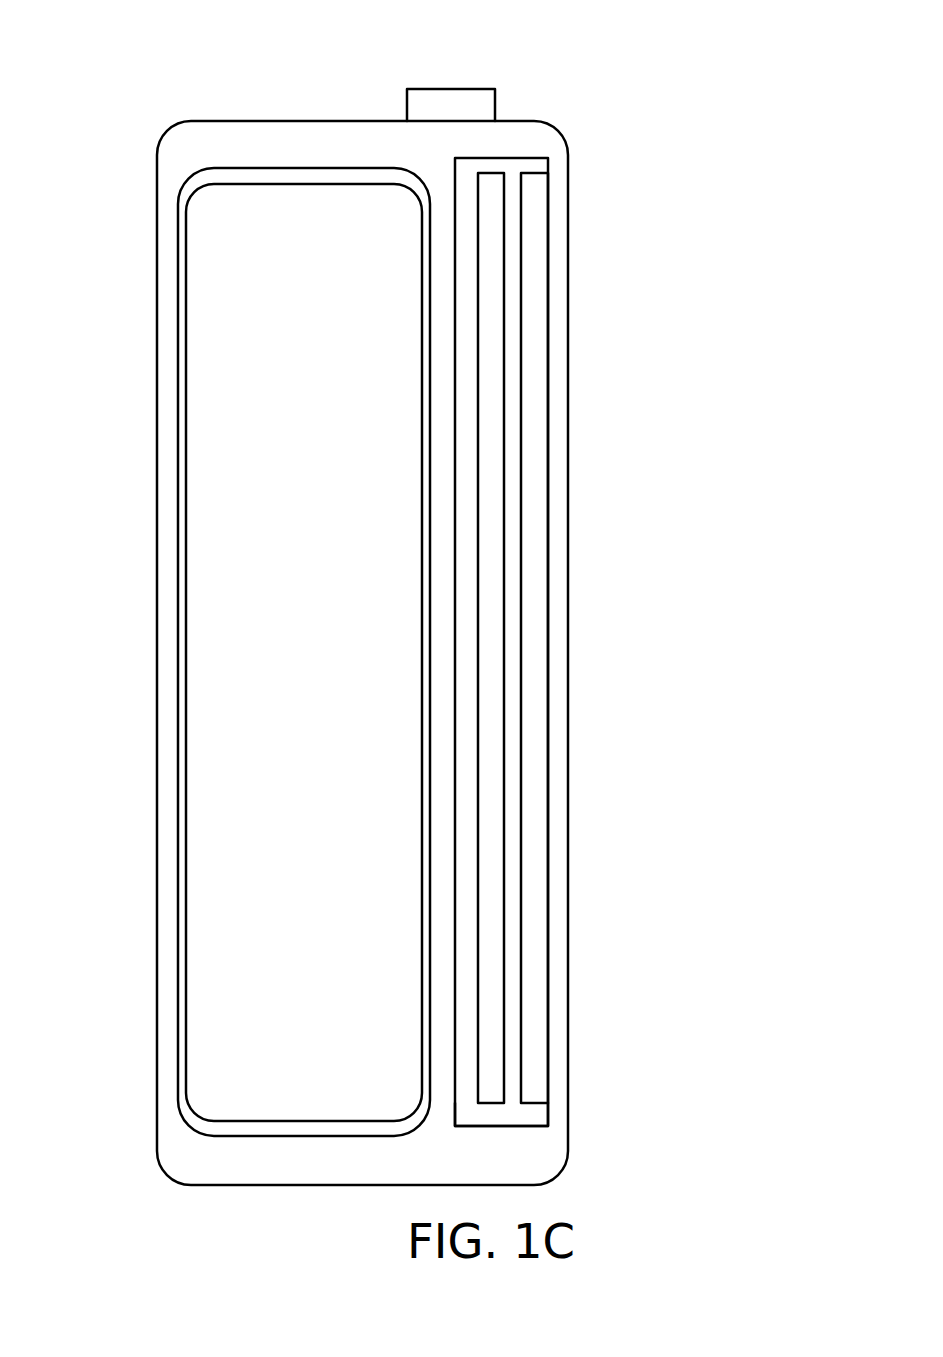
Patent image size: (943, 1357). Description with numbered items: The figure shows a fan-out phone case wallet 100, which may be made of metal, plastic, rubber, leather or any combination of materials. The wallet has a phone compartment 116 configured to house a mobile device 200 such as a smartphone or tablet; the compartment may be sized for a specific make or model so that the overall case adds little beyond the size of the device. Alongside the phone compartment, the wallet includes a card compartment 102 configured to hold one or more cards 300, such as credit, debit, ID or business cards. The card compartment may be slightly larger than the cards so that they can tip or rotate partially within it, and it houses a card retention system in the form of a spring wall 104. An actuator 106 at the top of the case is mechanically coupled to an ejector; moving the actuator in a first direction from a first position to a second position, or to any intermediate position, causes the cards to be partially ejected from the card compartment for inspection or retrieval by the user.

The fan-out phone case wallet 100 is at (185, 137).
The card compartment 102 is at (477, 1113).
The spring wall 104 is at (528, 520).
The actuator 106 is at (455, 88).
The phone compartment 116 is at (408, 183).
The mobile device 200 is at (280, 446).
The cards 300 is at (490, 239).